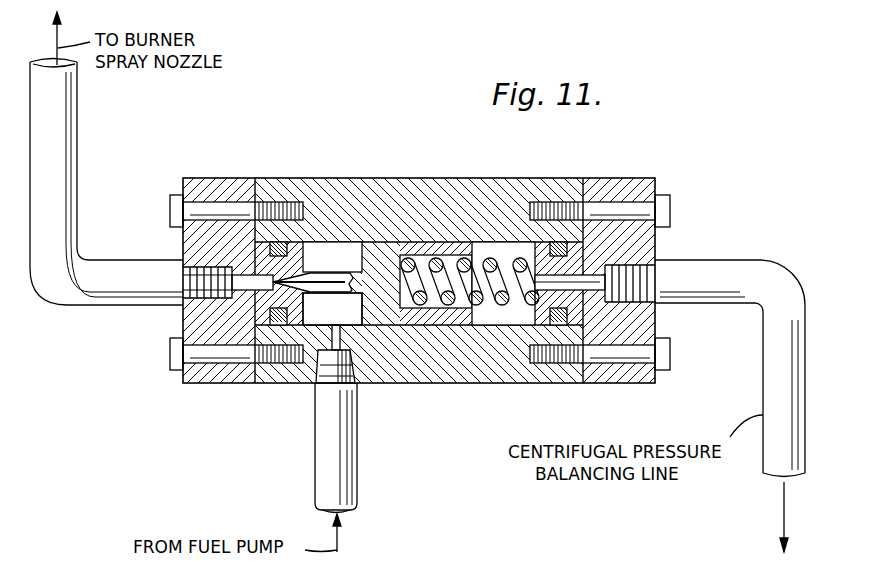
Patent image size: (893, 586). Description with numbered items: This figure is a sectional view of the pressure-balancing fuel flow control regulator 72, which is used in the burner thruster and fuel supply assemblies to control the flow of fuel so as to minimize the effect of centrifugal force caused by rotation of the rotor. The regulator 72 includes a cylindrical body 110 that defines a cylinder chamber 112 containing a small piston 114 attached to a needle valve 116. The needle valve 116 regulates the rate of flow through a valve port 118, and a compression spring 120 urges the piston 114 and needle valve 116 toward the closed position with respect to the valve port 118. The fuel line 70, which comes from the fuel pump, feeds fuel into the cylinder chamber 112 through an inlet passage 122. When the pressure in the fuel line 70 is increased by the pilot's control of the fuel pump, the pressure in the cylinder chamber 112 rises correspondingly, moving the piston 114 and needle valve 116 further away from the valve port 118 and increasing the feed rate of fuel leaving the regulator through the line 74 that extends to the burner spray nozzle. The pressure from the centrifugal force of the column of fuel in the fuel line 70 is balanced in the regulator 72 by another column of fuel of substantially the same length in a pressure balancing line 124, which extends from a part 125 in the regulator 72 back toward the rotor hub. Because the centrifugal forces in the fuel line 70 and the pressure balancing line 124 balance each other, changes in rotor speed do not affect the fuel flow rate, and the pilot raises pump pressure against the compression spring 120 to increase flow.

The fuel line 70 is at (323, 440).
The pressure-balancing fuel flow control regulator 72 is at (424, 282).
The line 74 is at (60, 132).
The cylindrical body 110 is at (478, 372).
The cylinder chamber 112 is at (340, 250).
The piston 114 is at (420, 222).
The needle valve 116 is at (326, 296).
The valve port 118 is at (258, 278).
The compression spring 120 is at (497, 257).
The inlet passage 122 is at (337, 337).
The pressure balancing line 124 is at (790, 378).
The part 125 is at (578, 274).